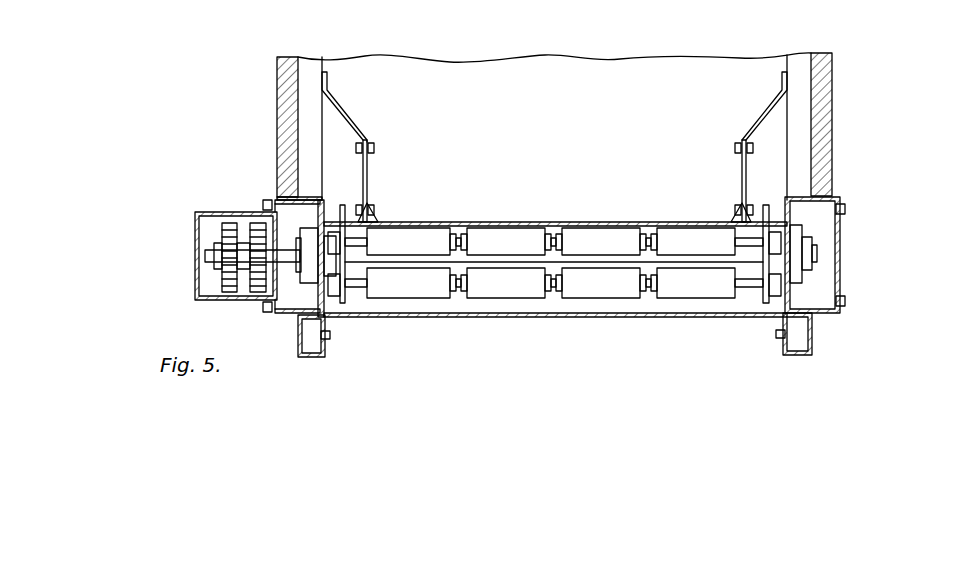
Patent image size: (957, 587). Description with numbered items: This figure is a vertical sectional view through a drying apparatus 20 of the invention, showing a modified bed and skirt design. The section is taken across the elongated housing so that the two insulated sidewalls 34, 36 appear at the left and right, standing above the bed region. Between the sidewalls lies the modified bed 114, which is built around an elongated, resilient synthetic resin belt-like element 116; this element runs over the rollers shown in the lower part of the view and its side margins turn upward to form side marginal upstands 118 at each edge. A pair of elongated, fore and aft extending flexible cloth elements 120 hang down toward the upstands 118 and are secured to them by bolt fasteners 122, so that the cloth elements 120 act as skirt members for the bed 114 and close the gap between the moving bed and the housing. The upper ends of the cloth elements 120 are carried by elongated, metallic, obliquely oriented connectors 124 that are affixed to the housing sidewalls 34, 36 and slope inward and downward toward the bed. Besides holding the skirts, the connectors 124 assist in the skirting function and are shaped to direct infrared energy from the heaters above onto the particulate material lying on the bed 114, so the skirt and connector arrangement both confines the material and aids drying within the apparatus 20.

The agitated bed drying apparatus 20 is at (558, 200).
The sidewall 34 is at (833, 127).
The sidewall 36 is at (278, 107).
The modified bed 114 is at (560, 130).
The belt-like element 116 is at (488, 222).
The side marginal upstands 118 is at (370, 208).
The flexible cloth elements 120 is at (368, 172).
The bolt fasteners 122 is at (748, 207).
The connectors 124 is at (338, 108).